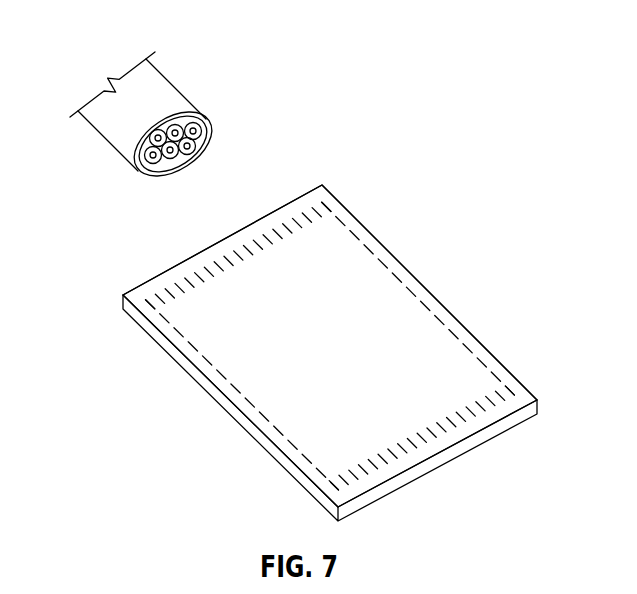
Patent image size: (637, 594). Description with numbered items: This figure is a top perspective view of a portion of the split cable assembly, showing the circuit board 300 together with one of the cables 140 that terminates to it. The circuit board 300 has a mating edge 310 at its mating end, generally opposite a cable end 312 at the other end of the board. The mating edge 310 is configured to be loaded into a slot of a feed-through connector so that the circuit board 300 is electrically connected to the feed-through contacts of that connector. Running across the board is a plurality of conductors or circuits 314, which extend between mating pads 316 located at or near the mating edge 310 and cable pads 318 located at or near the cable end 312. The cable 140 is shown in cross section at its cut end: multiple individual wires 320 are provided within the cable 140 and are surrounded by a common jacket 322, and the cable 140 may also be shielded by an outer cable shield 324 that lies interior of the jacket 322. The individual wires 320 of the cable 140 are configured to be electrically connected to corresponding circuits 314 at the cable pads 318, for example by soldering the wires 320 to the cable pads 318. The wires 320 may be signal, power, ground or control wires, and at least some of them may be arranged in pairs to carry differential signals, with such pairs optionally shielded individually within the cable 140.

The cable 140 is at (168, 129).
The jacket 322 is at (123, 131).
The outer cable shield 324 is at (209, 121).
The wires 320 is at (198, 152).
The circuit board 300 is at (317, 330).
The mating edge 310 is at (500, 427).
The cable end 312 is at (147, 281).
The circuits 314 is at (430, 310).
The mating pads 316 is at (507, 385).
The cable pads 318 is at (333, 201).